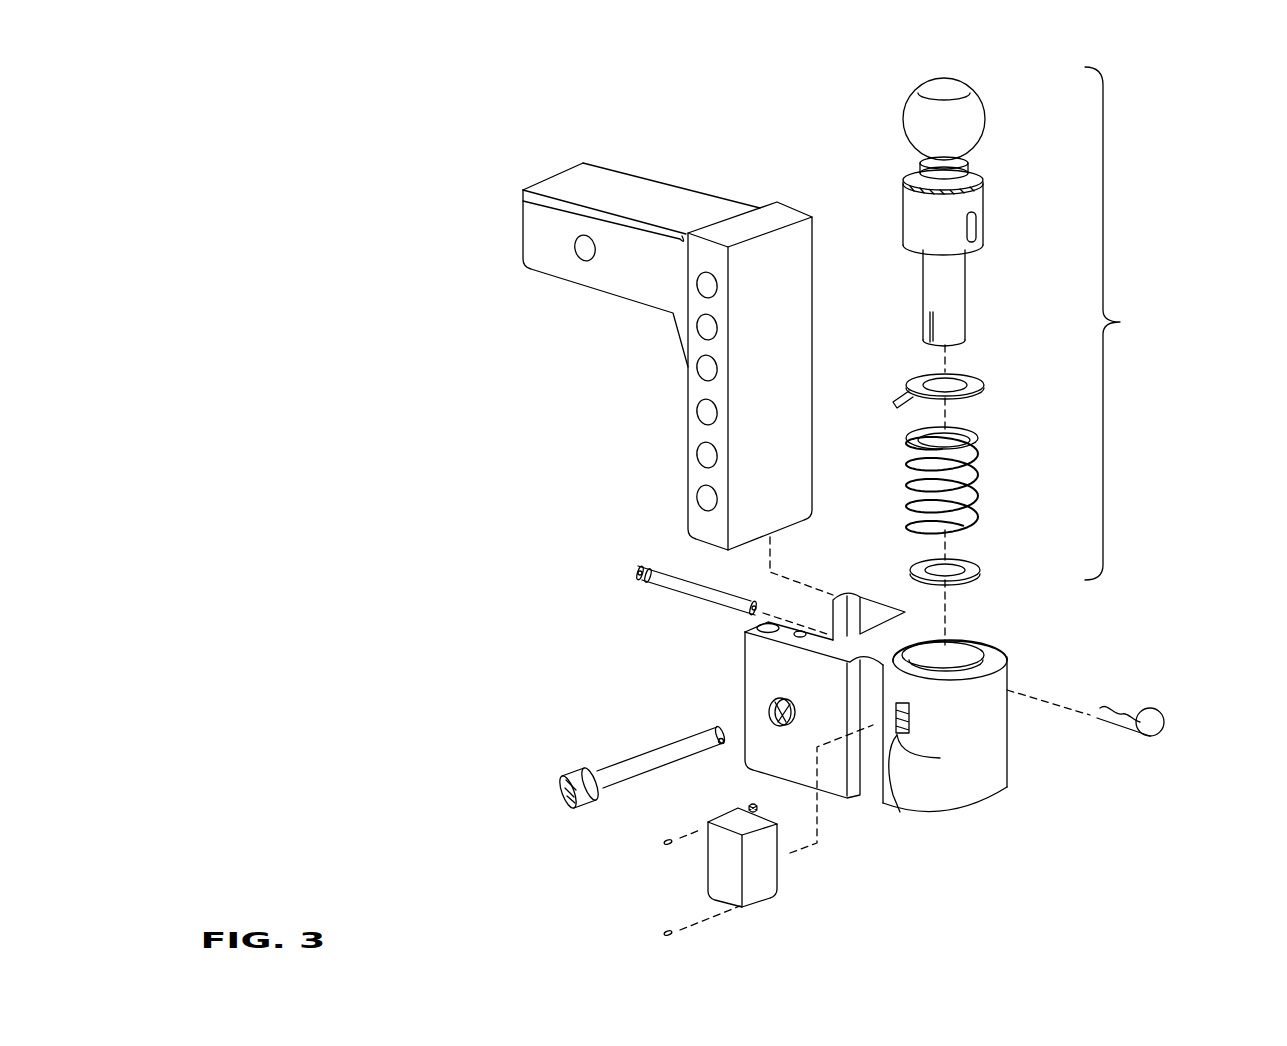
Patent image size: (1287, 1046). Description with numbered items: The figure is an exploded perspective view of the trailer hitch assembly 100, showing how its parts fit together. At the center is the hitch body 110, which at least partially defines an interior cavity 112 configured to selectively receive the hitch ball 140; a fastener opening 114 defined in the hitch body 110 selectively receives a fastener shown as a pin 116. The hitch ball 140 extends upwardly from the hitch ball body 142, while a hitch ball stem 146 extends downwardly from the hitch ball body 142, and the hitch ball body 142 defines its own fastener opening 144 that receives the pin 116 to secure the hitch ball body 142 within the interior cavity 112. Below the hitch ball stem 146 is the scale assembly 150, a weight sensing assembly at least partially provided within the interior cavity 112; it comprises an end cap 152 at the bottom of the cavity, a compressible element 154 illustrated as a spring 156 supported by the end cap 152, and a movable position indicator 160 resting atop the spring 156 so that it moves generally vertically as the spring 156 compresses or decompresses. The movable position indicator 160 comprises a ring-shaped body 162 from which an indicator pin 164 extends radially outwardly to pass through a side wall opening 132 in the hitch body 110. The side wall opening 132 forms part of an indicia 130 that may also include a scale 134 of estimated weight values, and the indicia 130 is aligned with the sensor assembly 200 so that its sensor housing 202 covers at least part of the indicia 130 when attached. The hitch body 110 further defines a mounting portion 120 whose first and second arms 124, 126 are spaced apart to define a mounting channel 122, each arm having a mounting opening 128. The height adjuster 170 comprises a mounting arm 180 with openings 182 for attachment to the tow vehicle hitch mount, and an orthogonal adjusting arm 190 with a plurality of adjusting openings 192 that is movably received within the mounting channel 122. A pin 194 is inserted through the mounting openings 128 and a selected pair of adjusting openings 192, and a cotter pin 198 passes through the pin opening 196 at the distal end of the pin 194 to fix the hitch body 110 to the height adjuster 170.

The trailer hitch assembly 100 is at (413, 67).
The hitch body 110 is at (981, 719).
The interior cavity 112 is at (958, 651).
The fastener opening 114 is at (998, 660).
The pin 116 is at (668, 592).
The mounting portion 120 is at (772, 686).
The mounting channel 122 is at (757, 631).
The first arm 124 is at (796, 640).
The second arm 126 is at (903, 600).
The mounting opening 128 is at (768, 710).
The indicia 130 is at (912, 720).
The side wall opening 132 is at (900, 812).
The scale 134 is at (940, 758).
The hitch ball 140 is at (985, 121).
The hitch ball body 142 is at (975, 200).
The fastener opening 144 is at (978, 226).
The hitch ball stem 146 is at (968, 296).
The scale assembly 150 is at (1007, 356).
The end cap 152 is at (975, 565).
The compressible element 154 is at (1000, 477).
The spring 156 is at (988, 472).
The movable position indicator 160 is at (960, 373).
The ring-shaped body 162 is at (980, 382).
The indicator pin 164 is at (893, 402).
The height adjuster 170 is at (723, 380).
The mounting arm 180 is at (605, 246).
The openings 182 is at (575, 246).
The adjusting arm 190 is at (798, 258).
The adjusting openings 192 is at (700, 418).
The pin 194 is at (611, 776).
The pin opening 196 is at (722, 746).
The cotter pin 198 is at (1167, 718).
The sensor assembly 200 is at (735, 883).
The sensor housing 202 is at (718, 865).